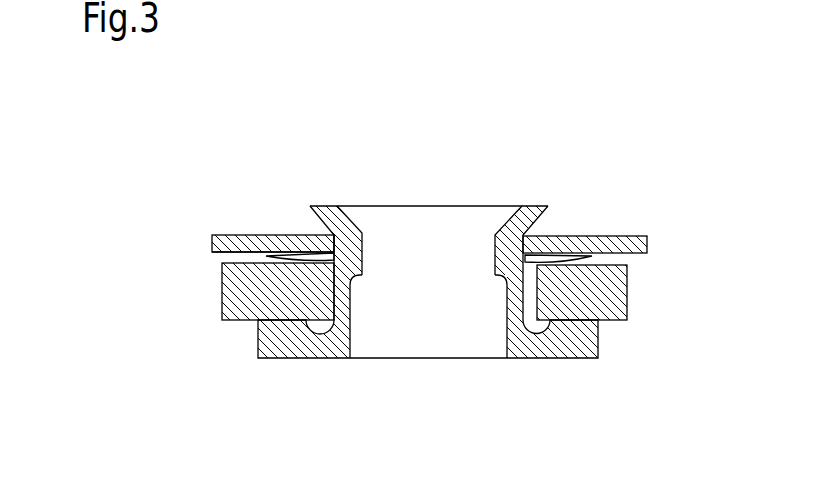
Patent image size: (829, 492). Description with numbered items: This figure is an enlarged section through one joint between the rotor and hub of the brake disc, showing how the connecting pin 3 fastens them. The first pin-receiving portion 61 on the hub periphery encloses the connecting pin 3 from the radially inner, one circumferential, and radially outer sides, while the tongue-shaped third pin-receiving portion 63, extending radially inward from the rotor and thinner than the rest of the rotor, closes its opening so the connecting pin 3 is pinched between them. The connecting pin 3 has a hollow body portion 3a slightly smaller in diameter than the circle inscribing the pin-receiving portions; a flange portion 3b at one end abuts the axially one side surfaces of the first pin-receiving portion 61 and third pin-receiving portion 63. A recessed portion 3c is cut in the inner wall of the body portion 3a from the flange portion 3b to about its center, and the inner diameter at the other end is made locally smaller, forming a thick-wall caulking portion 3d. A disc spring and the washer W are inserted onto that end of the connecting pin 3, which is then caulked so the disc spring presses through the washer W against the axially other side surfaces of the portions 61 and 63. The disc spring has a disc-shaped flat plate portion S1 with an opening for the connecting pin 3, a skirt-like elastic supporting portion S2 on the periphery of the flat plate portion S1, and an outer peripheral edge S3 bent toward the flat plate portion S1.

The connecting pin 3 is at (525, 183).
The body portion 3a is at (558, 253).
The flange portion 3b is at (293, 348).
The recessed portion 3c is at (353, 320).
The caulking portion 3d is at (352, 222).
The flat plate portion S1 is at (332, 248).
The elastic supporting portion S2 is at (283, 252).
The outer peripheral edge S3 is at (224, 234).
The washer W is at (300, 255).
The first pin-receiving portion 61 is at (238, 298).
The third pin-receiving portion 63 is at (613, 290).